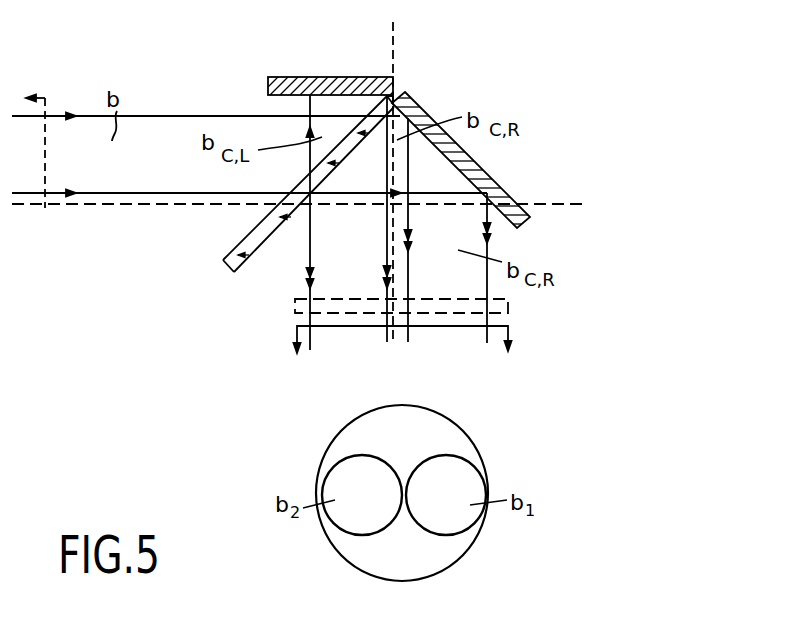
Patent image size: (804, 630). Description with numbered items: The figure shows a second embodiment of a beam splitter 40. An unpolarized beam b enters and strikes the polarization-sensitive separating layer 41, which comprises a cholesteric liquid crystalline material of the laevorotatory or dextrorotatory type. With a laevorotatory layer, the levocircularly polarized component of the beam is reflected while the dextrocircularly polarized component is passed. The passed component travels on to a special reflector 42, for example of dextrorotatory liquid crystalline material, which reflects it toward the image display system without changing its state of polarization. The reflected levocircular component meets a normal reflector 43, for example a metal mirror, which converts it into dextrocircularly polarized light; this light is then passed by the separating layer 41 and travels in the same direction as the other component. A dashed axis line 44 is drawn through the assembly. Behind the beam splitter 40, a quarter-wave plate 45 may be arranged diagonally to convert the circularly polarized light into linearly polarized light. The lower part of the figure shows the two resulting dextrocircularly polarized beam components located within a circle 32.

The circle 32 is at (462, 432).
The beam splitter 40 is at (470, 26).
The polarization-sensitive separating layer 41 is at (266, 234).
The special reflector 42 is at (490, 182).
The normal reflector 43 is at (342, 77).
The optical axis 44 is at (395, 50).
The λ/4 plate 45 is at (512, 307).